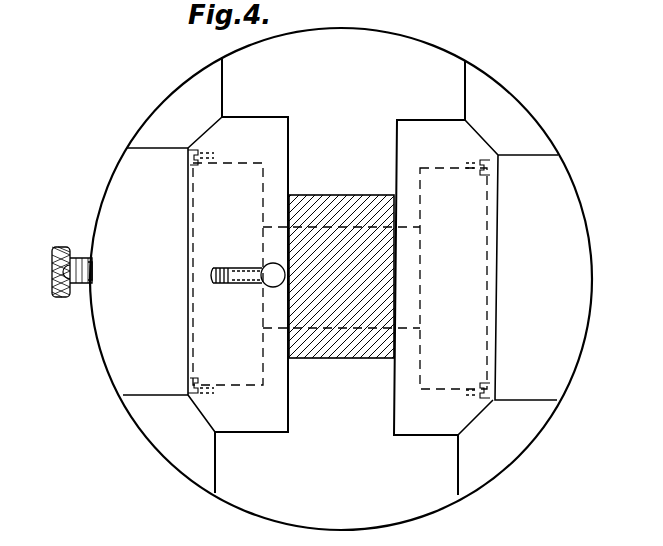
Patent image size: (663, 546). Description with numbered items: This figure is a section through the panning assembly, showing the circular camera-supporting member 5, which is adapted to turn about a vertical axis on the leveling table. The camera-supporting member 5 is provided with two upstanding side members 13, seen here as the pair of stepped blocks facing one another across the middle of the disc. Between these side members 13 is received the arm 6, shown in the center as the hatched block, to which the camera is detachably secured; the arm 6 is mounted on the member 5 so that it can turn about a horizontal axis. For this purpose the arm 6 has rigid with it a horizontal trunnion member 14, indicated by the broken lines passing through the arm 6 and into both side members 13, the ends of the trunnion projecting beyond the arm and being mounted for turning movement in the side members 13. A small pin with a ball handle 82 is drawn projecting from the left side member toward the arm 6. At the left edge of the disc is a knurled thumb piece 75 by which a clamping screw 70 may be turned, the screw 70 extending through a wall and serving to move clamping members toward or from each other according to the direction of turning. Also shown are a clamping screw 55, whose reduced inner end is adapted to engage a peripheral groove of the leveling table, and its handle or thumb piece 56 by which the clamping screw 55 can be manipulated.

The camera-supporting member 5 is at (170, 104).
The upstanding side members 13 is at (273, 170).
The arm 6 is at (332, 208).
The horizontal trunnion member 14 is at (410, 230).
The locking pin with ball handle 82 is at (250, 284).
The knurled thumb piece 75 is at (60, 245).
The clamping screw 70 is at (92, 262).
The handle or thumb piece 56 is at (72, 294).
The clamping screw 55 is at (91, 285).